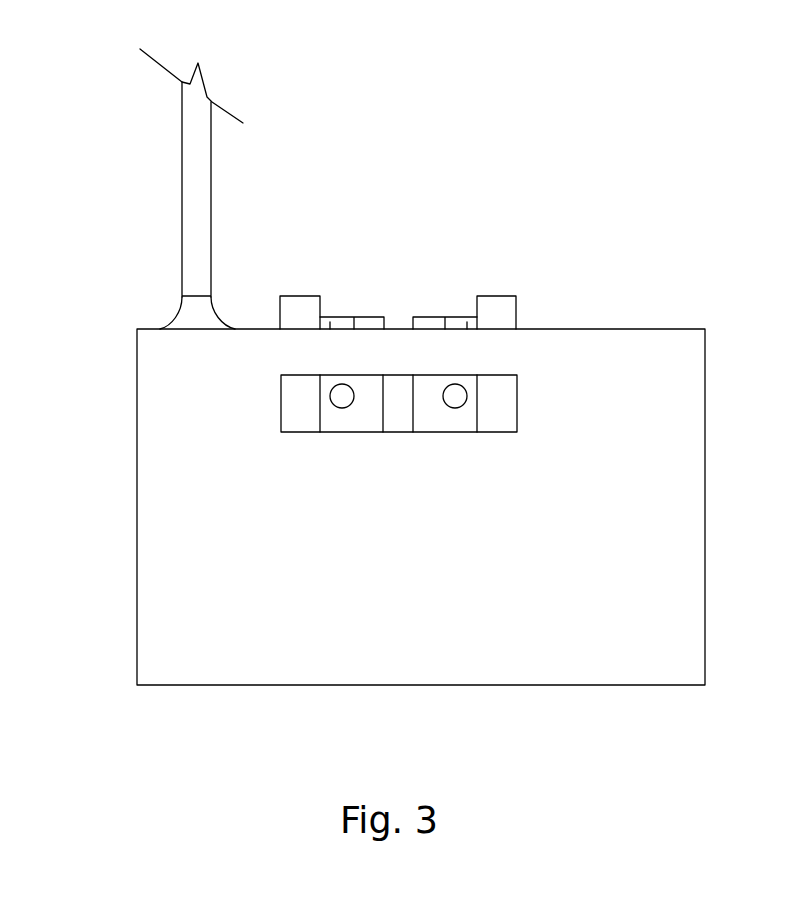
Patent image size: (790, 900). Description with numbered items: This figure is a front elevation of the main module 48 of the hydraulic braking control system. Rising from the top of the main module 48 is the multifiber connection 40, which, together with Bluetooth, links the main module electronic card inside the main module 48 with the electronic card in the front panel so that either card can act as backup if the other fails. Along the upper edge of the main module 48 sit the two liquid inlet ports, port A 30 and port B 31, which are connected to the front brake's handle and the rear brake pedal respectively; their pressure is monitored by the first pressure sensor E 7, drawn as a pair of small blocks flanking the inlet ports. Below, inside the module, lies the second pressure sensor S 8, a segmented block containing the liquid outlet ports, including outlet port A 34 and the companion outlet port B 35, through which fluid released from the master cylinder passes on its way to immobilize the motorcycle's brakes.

The multifiber connection 40 is at (173, 208).
The main module 48 is at (154, 376).
The first pressure sensor 7 is at (293, 290).
The liquid inlet port A 30 is at (337, 308).
The liquid inlet port B 31 is at (451, 308).
The second pressure sensor 8 is at (293, 407).
The liquid outlet port A 34 is at (345, 407).
The contact B 35 is at (458, 407).